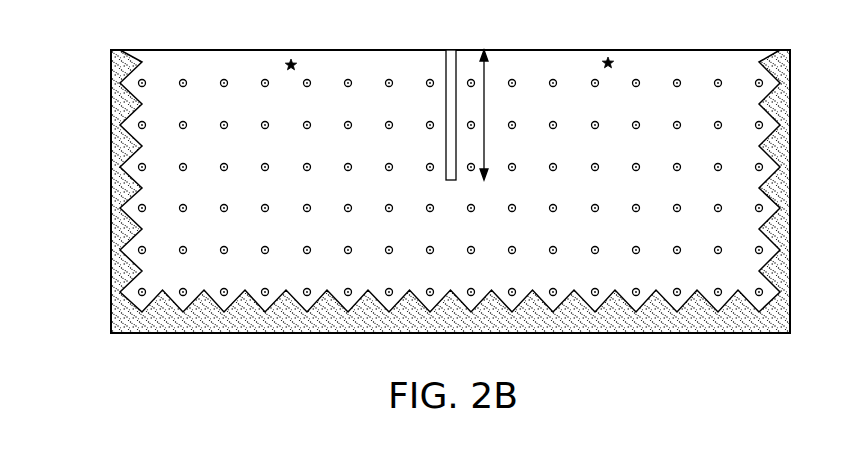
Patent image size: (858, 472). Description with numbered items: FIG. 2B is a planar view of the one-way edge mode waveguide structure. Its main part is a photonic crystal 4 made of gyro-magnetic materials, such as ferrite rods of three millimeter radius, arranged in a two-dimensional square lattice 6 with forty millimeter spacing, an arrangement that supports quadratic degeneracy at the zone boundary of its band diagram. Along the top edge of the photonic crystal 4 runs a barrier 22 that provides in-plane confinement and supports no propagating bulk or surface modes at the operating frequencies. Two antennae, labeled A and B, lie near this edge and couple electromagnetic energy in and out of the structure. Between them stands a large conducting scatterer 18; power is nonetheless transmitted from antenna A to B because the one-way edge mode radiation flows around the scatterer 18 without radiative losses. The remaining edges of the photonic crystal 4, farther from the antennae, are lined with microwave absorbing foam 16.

The photonic crystal 4 is at (207, 103).
The square lattice 6 is at (681, 67).
The microwave absorbing foam 16 is at (790, 196).
The conducting scatterer 18 is at (448, 48).
The barrier 22 is at (361, 48).